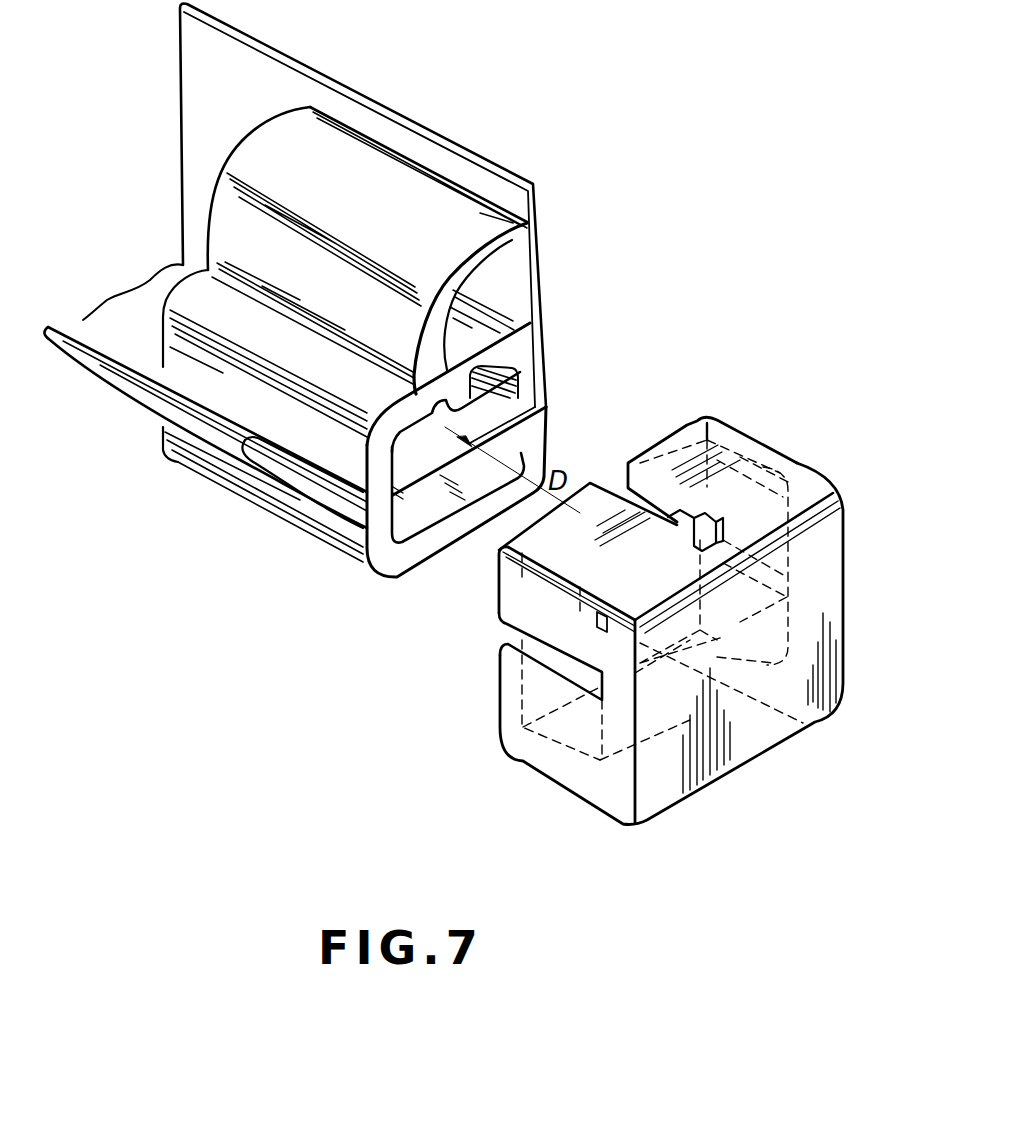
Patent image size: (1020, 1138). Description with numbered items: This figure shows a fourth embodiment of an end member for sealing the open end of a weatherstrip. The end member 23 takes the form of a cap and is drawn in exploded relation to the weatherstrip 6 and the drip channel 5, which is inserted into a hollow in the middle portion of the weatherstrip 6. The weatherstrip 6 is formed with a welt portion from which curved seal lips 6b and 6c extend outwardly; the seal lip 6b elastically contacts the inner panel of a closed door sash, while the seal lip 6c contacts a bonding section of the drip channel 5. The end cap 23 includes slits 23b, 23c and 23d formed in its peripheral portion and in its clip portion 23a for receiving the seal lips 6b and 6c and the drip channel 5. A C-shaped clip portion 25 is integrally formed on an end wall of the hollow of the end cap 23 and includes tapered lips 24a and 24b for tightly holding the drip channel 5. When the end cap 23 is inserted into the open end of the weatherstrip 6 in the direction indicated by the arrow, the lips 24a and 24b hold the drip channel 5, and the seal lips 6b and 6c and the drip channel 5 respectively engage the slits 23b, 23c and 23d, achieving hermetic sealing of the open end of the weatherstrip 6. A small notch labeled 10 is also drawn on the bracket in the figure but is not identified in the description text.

The drip channel 5 is at (445, 152).
The weatherstrip 6 is at (487, 348).
The seal lip 6b is at (303, 489).
The seal lip 6c is at (450, 283).
The notch 10 is at (449, 402).
The end member 23 is at (562, 783).
The clip portion 23a is at (530, 763).
The slit 23b is at (523, 642).
The slit 23c is at (638, 500).
The slit 23d is at (777, 552).
The tapered lip 24a is at (582, 625).
The tapered lip 24b is at (578, 640).
The C-shaped clip portion 25 is at (840, 580).